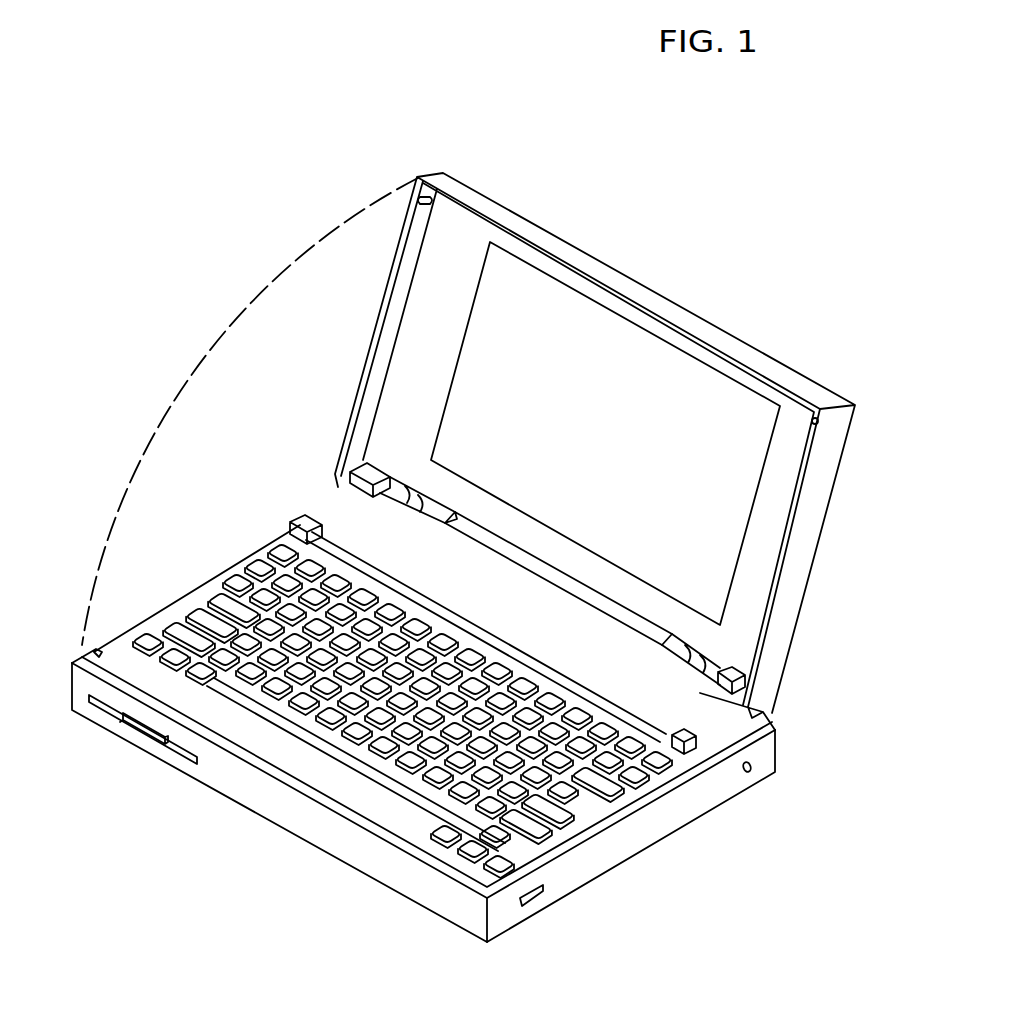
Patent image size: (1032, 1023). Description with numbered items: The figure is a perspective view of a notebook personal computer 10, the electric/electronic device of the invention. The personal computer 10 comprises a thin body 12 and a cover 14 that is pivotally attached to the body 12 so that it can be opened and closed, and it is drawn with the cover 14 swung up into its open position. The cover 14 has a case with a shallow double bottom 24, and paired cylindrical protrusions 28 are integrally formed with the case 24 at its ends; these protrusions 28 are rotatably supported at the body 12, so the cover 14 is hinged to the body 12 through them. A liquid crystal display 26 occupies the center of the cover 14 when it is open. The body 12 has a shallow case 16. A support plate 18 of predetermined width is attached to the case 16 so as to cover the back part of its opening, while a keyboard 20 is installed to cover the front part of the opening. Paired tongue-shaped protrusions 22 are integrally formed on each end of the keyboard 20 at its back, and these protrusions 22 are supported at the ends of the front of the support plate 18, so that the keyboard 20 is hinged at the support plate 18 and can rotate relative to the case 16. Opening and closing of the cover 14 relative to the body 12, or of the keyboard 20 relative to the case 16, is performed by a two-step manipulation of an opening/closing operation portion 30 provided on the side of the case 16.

The personal computer 10 is at (156, 208).
The body 12 is at (654, 860).
The cover 14 is at (695, 245).
The case 16 is at (298, 820).
The support plate 18 is at (347, 520).
The keyboard 20 is at (123, 648).
The protrusions 22 is at (300, 522).
The case 24 is at (818, 552).
The liquid crystal display 26 is at (561, 346).
The cylindrical protrusions 28 is at (372, 478).
The opening/closing operation portion 30 is at (538, 904).